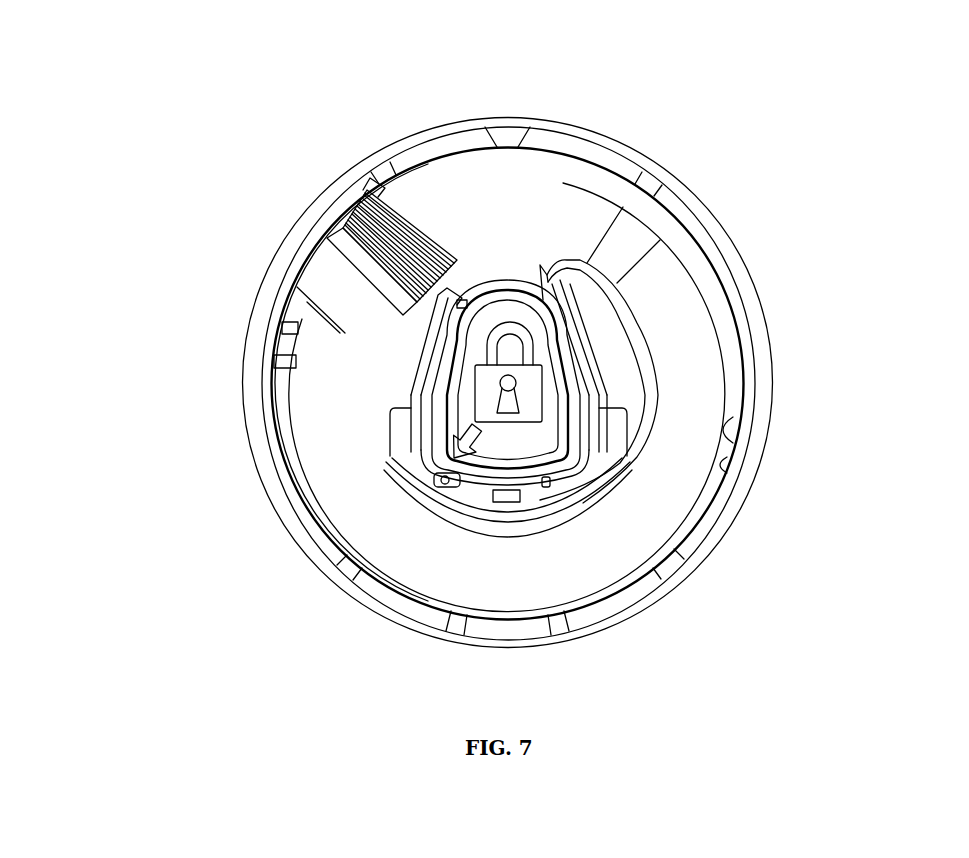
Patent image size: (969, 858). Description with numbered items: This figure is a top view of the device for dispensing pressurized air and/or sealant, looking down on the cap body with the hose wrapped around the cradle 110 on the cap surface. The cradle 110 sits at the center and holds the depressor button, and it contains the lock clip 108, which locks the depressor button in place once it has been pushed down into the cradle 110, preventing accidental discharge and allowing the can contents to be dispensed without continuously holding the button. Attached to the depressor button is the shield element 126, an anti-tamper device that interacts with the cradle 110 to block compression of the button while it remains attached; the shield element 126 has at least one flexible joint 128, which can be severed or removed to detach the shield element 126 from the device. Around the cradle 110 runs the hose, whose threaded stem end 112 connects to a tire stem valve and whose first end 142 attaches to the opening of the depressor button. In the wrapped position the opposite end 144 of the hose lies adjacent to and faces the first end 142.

The lock clip 108 is at (433, 478).
The cradle 110 is at (588, 374).
The stem end 112 is at (355, 290).
The shield element 126 is at (603, 483).
The flexible joint 128 is at (463, 482).
The first end 142 is at (548, 242).
The opposite end 144 is at (322, 367).